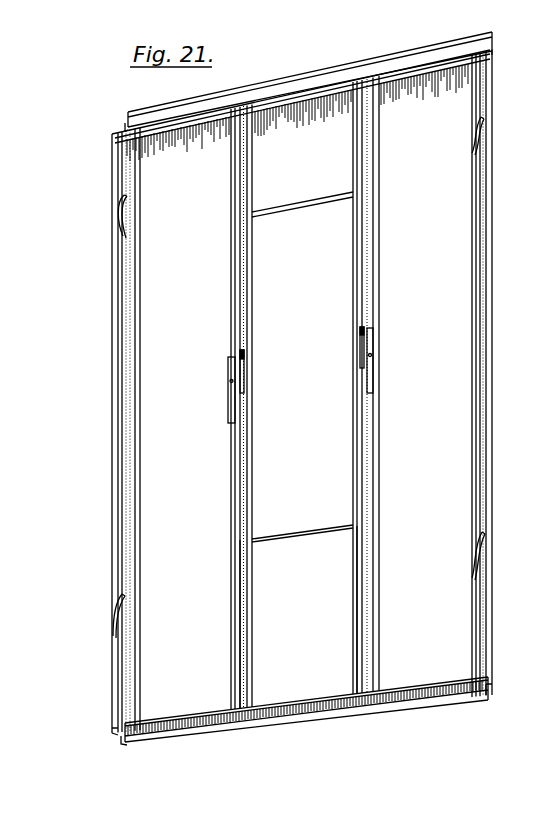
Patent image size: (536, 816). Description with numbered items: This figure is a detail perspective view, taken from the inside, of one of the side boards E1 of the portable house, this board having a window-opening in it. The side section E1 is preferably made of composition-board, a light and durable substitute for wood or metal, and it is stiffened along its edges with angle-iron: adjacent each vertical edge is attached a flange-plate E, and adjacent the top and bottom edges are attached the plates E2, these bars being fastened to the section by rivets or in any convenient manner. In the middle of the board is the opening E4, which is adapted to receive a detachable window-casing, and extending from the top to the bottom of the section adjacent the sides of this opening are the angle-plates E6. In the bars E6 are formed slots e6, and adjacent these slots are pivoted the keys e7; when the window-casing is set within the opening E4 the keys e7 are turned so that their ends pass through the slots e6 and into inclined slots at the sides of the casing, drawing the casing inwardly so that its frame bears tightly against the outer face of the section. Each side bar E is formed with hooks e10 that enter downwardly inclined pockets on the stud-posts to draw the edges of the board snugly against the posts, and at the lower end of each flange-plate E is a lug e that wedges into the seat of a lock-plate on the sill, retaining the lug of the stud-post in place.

The flange-plate E is at (510, 456).
The side board E1 is at (297, 289).
The plates E2 is at (287, 92).
The opening E4 is at (302, 316).
The angle-plates E6 is at (357, 602).
The slots e6 is at (245, 355).
The keys e7 is at (387, 363).
The hooks e10 is at (96, 593).
The lug e is at (112, 733).